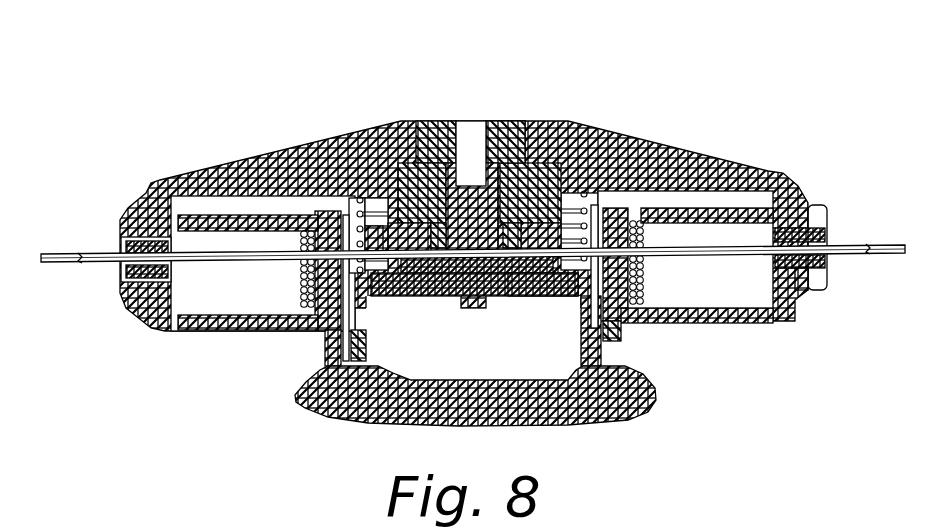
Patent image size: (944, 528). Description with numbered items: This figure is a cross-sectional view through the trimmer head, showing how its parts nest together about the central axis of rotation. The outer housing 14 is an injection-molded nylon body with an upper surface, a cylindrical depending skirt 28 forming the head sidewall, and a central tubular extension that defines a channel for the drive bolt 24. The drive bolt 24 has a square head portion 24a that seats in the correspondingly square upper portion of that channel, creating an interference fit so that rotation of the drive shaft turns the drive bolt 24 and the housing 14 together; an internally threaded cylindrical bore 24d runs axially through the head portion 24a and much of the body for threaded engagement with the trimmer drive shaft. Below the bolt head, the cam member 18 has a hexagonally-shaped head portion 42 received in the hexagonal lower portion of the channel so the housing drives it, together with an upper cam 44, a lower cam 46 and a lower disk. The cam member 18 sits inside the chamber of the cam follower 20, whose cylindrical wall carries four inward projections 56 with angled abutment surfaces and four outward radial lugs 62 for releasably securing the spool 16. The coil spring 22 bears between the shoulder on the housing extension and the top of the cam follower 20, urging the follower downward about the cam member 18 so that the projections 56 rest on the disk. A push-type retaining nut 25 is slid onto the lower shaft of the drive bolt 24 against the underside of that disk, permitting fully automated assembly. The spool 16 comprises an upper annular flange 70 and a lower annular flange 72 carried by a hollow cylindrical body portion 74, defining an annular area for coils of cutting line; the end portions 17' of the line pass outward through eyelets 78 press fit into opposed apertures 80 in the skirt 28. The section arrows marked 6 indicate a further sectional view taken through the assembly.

The housing 14 is at (338, 123).
The spool 16 is at (292, 409).
The end portions of the cutting line 17' is at (475, 212).
The cam member 18 is at (513, 295).
The cam follower 20 is at (338, 351).
The coil spring 22 is at (592, 192).
The drive bolt 24 is at (427, 113).
The square head portion 24a is at (538, 116).
The internally threaded cylindrical bore 24d is at (470, 127).
The retaining nut 25 is at (492, 300).
The cylindrical depending skirt 28 is at (813, 223).
The hexagonally-shaped head portion 42 is at (540, 195).
The upper cam 44 is at (388, 145).
The lower cam 46 is at (417, 288).
The projections 56 is at (363, 283).
The radial lugs 62 is at (322, 333).
The upper annular flange 70 is at (667, 200).
The lower annular flange 72 is at (710, 318).
The hollow cylindrical body portion 74 is at (640, 282).
The eyelets 78 is at (815, 255).
The apertures 80 is at (807, 200).
The section line 6 is at (165, 253).